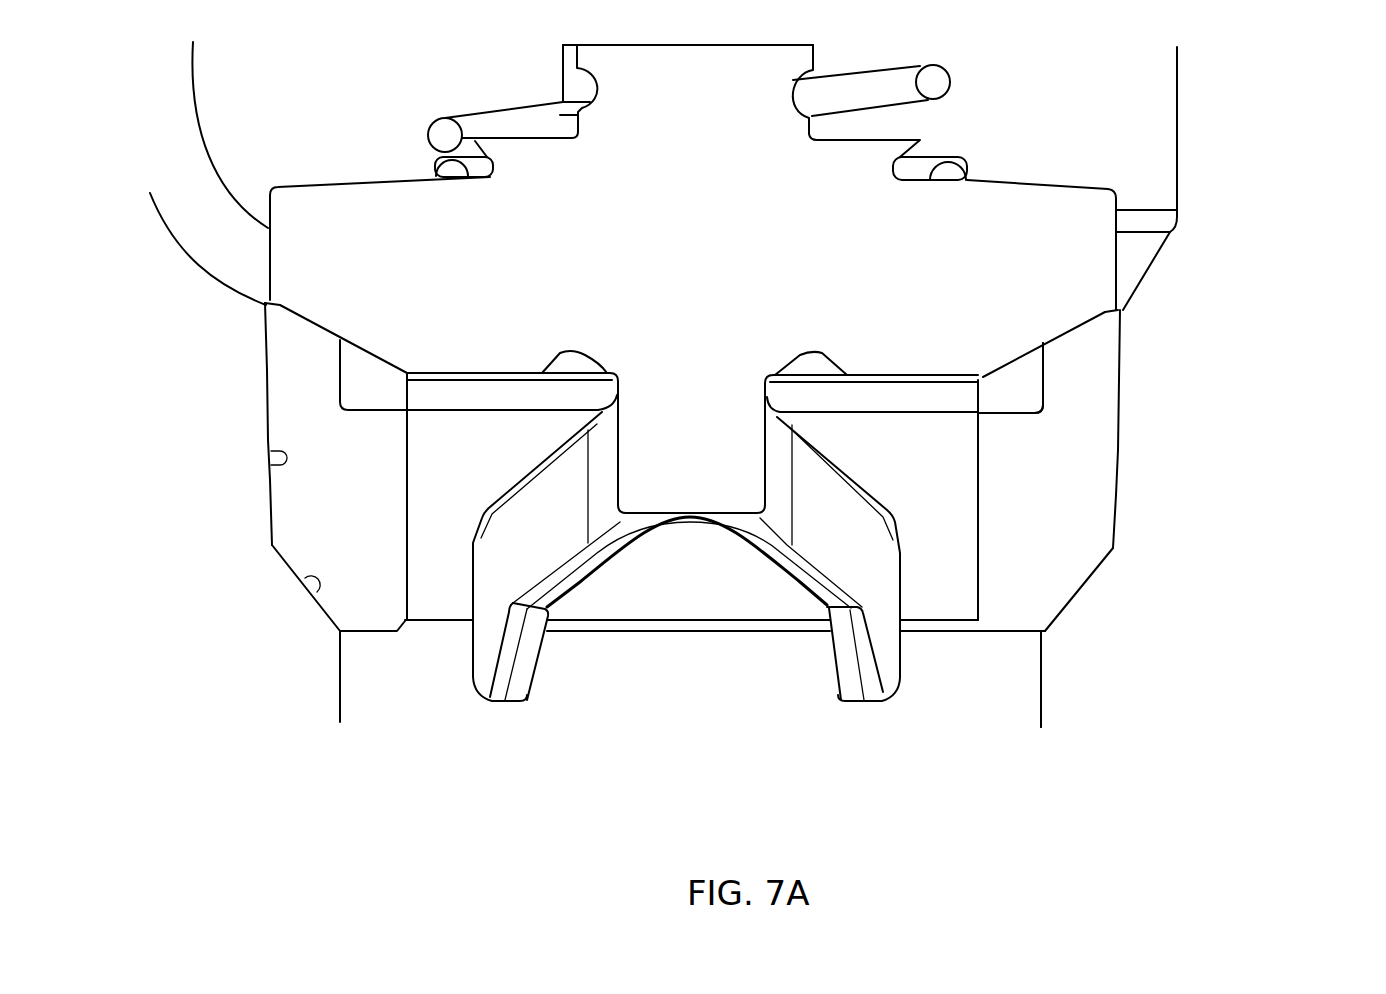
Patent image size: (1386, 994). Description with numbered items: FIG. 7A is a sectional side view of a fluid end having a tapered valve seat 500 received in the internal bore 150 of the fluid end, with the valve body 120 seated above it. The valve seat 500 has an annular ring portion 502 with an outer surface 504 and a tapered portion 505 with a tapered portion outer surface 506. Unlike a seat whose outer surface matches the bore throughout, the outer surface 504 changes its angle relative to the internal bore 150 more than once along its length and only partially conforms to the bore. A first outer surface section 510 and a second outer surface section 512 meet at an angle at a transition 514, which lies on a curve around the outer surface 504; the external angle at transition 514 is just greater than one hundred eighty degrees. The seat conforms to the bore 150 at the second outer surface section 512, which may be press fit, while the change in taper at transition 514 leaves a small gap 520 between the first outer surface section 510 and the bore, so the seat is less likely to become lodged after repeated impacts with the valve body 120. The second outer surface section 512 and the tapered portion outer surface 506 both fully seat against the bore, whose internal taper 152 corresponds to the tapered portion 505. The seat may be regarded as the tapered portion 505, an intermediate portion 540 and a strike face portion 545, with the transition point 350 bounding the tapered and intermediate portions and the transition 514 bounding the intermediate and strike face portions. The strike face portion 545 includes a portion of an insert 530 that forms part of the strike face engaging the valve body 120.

The valve body 120 is at (1065, 280).
The gap 520 is at (262, 297).
The first outer surface section 510 is at (265, 352).
The transition 514 is at (266, 421).
The internal bore 150 is at (270, 452).
The second outer surface section 512 is at (270, 498).
The annular ring portion 502 is at (418, 491).
The transition point 350 is at (270, 545).
The internal taper 152 is at (322, 585).
The insert 530 is at (1028, 393).
The strike face portion 545 is at (1124, 422).
The outer surface 504 is at (1118, 480).
The intermediate portion 540 is at (1122, 511).
The valve seat 500 is at (1192, 578).
The tapered portion 505 is at (1091, 586).
The tapered portion outer surface 506 is at (1055, 620).